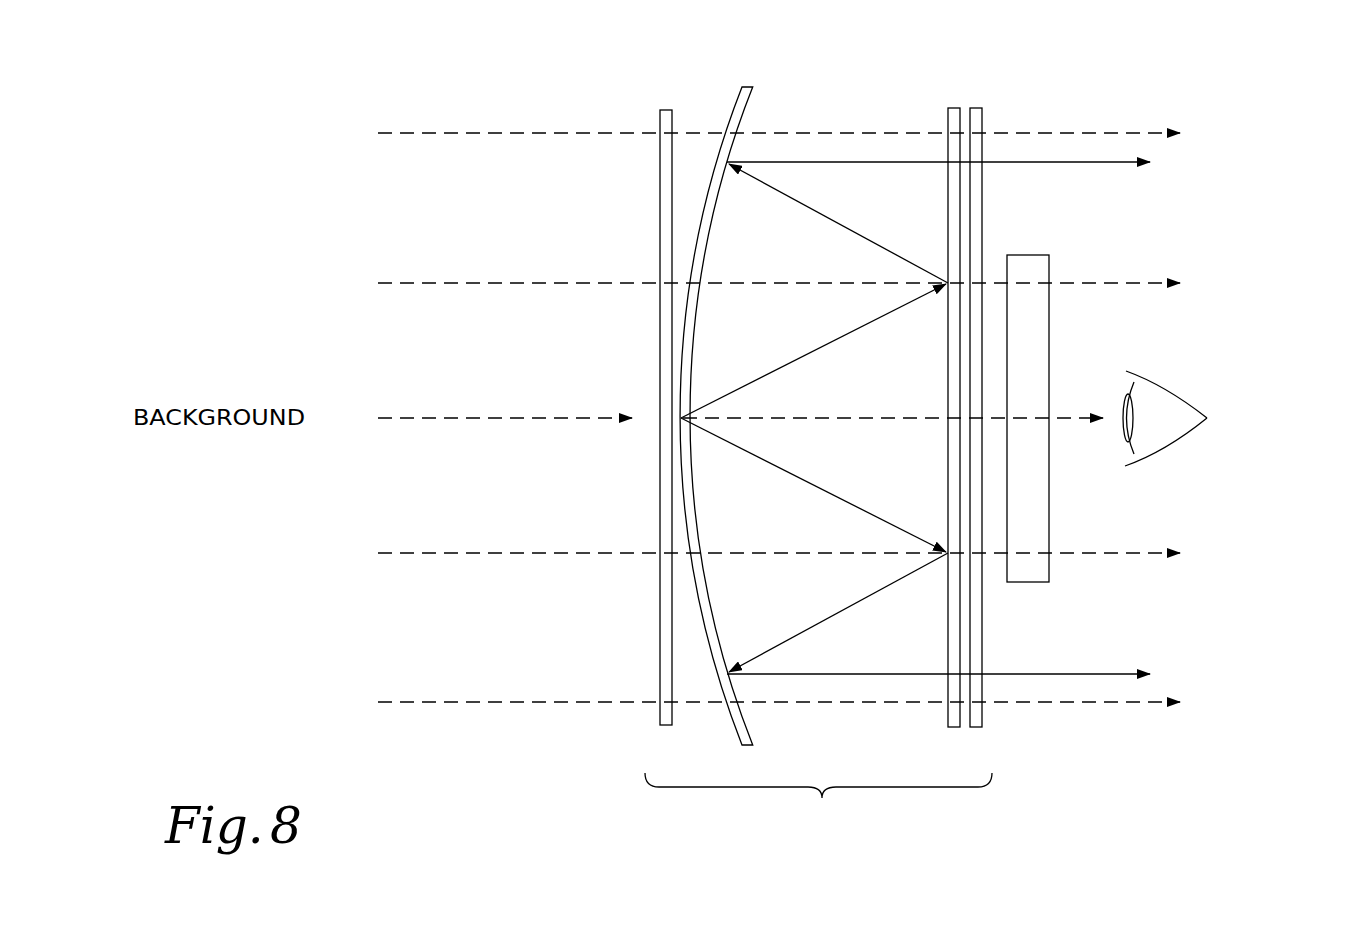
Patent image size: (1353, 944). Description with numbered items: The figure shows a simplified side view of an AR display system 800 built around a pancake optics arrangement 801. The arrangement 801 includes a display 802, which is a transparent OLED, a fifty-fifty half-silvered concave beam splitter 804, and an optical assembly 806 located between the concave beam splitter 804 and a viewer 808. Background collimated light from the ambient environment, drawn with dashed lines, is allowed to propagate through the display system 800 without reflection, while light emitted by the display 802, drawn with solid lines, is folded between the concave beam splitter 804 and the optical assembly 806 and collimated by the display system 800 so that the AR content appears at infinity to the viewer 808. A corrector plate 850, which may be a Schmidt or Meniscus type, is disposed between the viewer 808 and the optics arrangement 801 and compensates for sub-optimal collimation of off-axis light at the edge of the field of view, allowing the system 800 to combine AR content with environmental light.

The display system 800 is at (1226, 71).
The pancake optics arrangement 801 is at (731, 802).
The display 802 is at (660, 204).
The concave beam splitter 804 is at (746, 729).
The optical assembly 806 is at (990, 91).
The viewer 808 is at (1188, 374).
The corrector plate 850 is at (1025, 255).